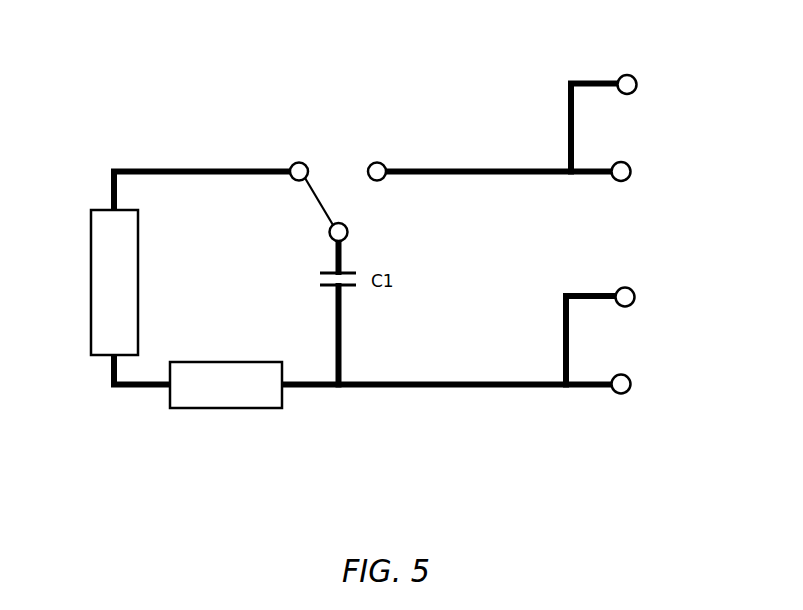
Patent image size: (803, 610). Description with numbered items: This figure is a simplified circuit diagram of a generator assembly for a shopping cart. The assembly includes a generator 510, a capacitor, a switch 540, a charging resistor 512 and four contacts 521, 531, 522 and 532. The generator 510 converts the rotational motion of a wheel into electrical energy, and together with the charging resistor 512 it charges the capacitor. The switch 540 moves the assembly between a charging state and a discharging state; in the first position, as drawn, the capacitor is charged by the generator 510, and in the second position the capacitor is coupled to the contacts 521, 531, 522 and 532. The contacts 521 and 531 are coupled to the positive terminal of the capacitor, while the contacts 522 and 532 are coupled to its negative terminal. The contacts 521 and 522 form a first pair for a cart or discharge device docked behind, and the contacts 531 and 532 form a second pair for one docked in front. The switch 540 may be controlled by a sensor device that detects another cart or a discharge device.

The generator 510 is at (90, 287).
The charging resistor 512 is at (228, 408).
The switch 540 is at (342, 152).
The contact 521 is at (634, 77).
The contact 531 is at (629, 163).
The contact 522 is at (633, 288).
The contact 532 is at (629, 375).